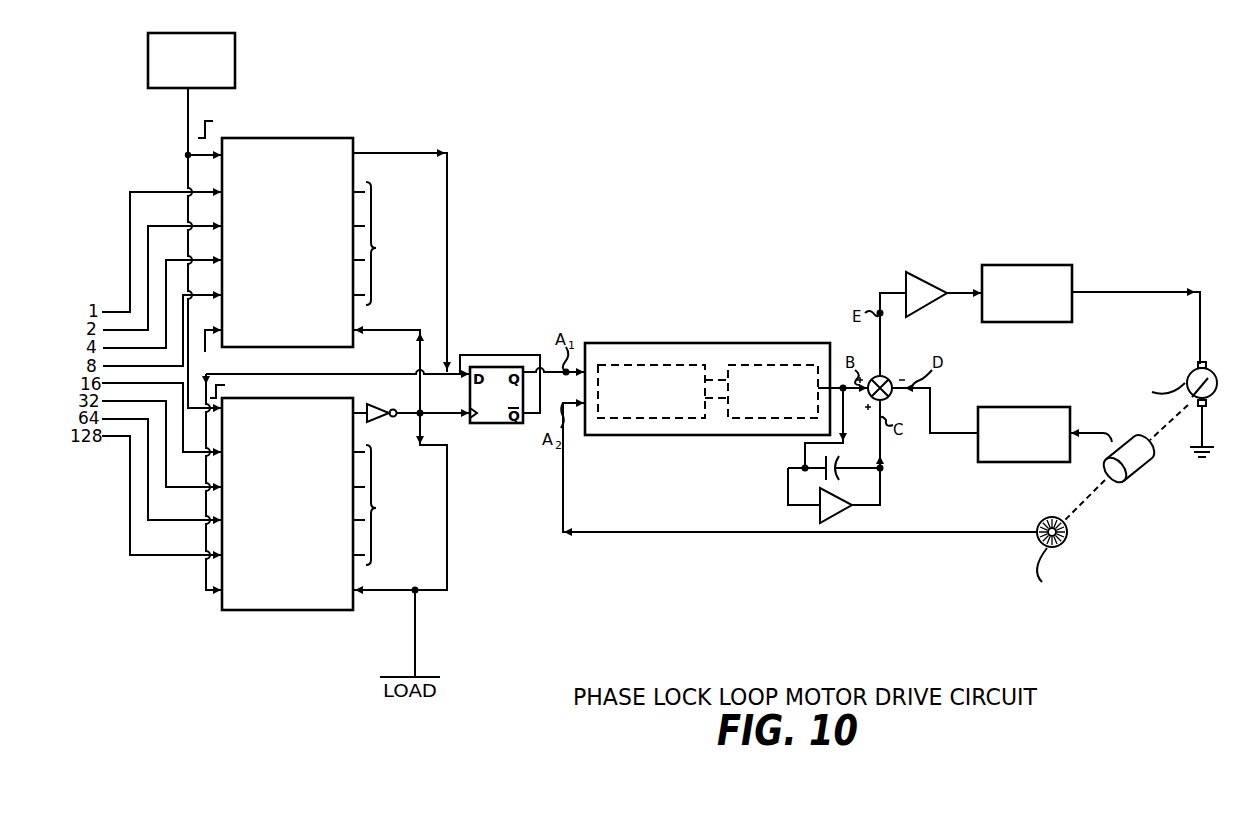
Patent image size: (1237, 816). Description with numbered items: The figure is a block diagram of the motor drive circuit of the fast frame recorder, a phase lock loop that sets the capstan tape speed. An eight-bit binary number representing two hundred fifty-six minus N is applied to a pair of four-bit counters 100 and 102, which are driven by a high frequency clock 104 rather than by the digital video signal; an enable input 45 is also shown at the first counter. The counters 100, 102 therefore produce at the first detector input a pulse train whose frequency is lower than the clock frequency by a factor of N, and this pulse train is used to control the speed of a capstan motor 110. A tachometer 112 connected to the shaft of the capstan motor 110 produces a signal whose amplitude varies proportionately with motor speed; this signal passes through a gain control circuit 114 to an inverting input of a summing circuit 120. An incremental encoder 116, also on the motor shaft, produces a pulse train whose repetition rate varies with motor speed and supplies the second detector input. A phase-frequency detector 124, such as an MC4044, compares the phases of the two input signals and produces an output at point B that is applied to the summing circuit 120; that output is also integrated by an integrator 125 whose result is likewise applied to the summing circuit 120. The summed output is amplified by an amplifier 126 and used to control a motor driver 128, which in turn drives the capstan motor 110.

The high frequency clock 104 is at (263, 57).
The 4-bit counter 100 is at (333, 122).
The enable input 45 is at (209, 349).
The 4-bit counter 102 is at (336, 610).
The phase-frequency detector 124 is at (686, 343).
The summing circuit 120 is at (886, 377).
The integrator 125 is at (840, 513).
The amplifier 126 is at (913, 308).
The motor driver 128 is at (1010, 322).
The gain control circuit 114 is at (1016, 405).
The capstan motor 110 is at (1212, 372).
The tachometer 112 is at (1138, 462).
The incremental encoder 116 is at (1046, 520).